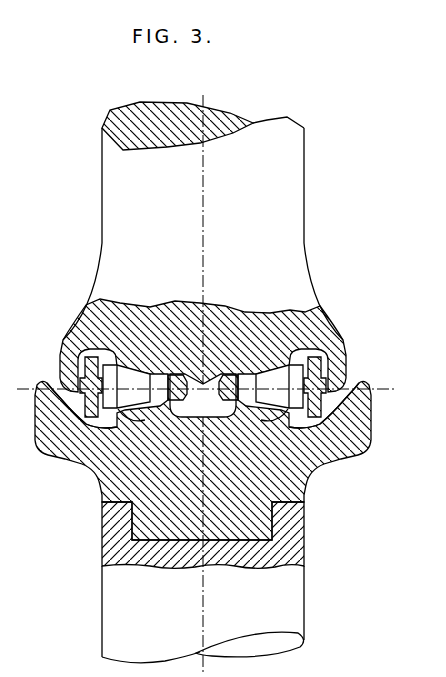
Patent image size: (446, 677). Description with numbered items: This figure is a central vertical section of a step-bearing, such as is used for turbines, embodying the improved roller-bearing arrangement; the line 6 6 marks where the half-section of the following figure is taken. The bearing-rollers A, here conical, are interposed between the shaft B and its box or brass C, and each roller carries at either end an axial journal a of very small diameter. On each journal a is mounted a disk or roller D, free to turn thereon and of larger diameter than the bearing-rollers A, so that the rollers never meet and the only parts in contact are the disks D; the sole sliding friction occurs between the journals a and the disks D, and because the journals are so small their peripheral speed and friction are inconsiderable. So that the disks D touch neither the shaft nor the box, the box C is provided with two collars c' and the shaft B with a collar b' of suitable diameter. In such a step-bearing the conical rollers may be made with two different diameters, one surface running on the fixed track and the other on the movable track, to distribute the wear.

The shaft B is at (203, 221).
The box or brass C is at (203, 481).
The bearing-roller A is at (203, 386).
The axial journal a is at (203, 387).
The collar b' is at (202, 376).
The collar c' is at (203, 422).
The disk or roller D is at (203, 405).
The section line 6 6 is at (206, 381).